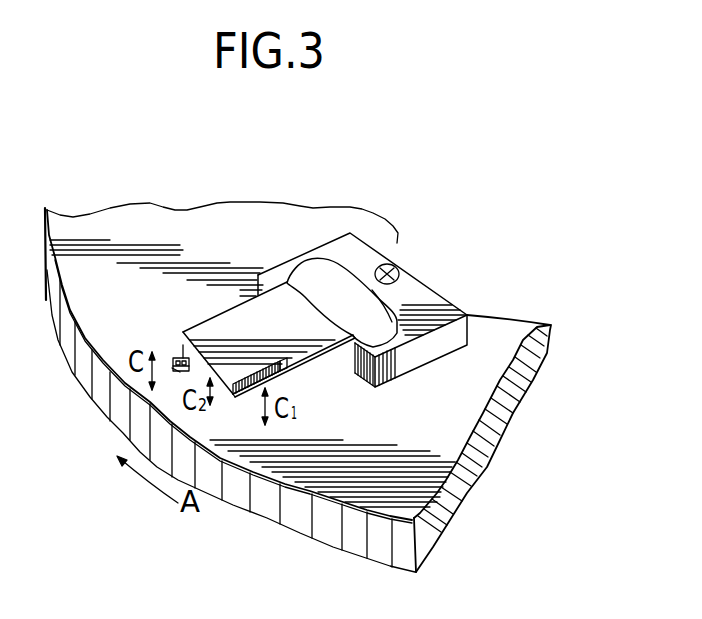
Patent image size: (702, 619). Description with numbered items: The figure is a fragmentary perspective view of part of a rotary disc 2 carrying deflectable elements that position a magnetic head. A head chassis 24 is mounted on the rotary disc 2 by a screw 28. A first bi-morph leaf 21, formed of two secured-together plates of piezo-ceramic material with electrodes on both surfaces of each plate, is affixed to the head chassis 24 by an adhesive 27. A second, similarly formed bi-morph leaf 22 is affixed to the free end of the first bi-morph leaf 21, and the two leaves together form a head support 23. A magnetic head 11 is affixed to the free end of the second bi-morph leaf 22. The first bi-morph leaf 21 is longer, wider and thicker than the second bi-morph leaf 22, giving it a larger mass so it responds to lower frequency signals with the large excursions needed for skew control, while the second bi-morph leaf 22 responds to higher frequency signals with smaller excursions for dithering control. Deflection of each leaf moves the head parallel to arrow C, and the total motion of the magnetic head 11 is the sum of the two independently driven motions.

The rotary disc 2 is at (93, 377).
The magnetic head 11 is at (173, 367).
The first bi-morph leaf 21 is at (208, 325).
The second bi-morph leaf 22 is at (183, 336).
The head support 23 is at (215, 300).
The head chassis 24 is at (425, 300).
The adhesive 27 is at (308, 272).
The screw 28 is at (392, 264).